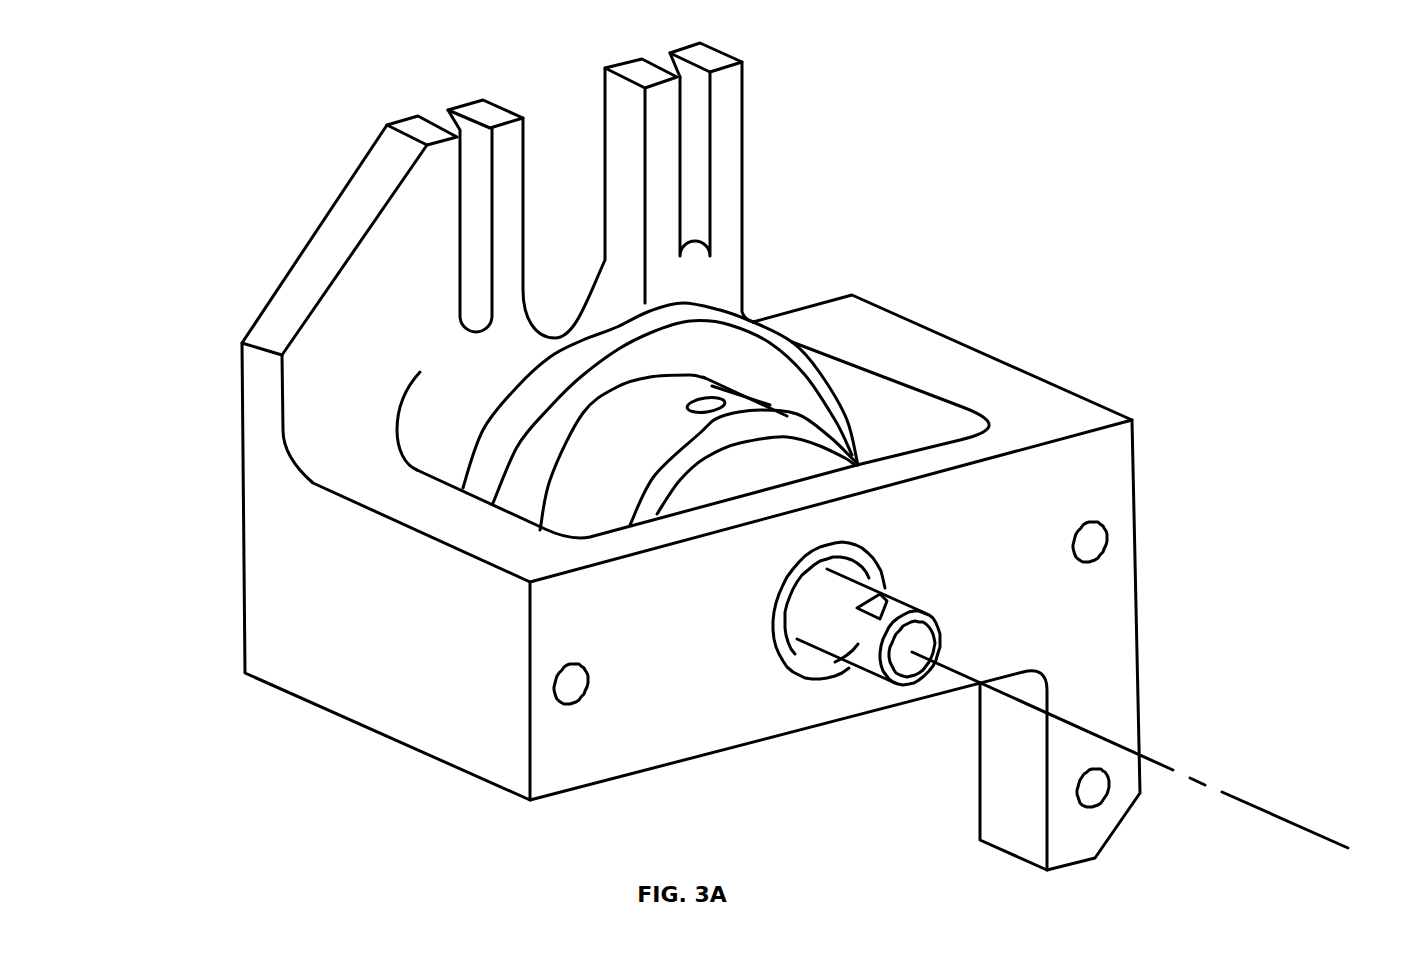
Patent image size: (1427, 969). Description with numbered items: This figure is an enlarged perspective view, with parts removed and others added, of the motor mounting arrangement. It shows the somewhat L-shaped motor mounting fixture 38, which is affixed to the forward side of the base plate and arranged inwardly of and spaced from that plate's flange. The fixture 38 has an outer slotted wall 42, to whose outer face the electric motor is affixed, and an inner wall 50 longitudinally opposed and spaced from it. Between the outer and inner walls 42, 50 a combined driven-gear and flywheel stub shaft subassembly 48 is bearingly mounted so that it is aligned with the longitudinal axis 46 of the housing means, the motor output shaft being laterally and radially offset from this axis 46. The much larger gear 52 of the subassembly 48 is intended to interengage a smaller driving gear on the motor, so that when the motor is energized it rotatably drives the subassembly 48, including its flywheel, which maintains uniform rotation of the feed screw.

The motor mounting fixture 38 is at (397, 630).
The outer slotted wall 42 is at (277, 315).
The longitudinal axis 46 is at (1275, 815).
The combined driven-gear and flywheel stub shaft subassembly 48 is at (517, 417).
The inner wall 50 is at (648, 695).
The gear 52 is at (750, 342).